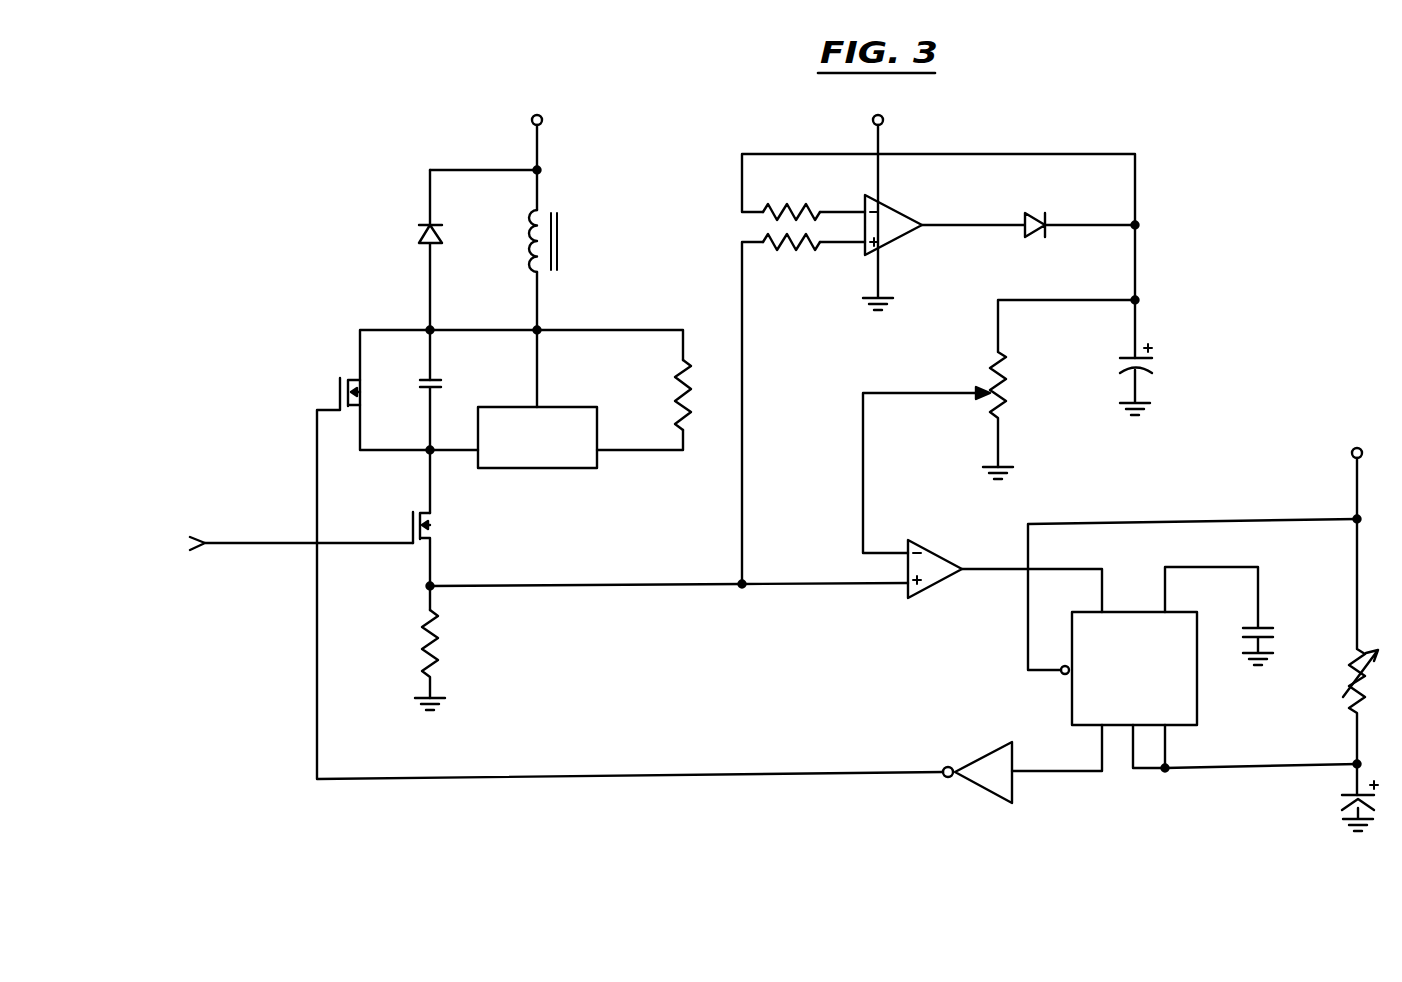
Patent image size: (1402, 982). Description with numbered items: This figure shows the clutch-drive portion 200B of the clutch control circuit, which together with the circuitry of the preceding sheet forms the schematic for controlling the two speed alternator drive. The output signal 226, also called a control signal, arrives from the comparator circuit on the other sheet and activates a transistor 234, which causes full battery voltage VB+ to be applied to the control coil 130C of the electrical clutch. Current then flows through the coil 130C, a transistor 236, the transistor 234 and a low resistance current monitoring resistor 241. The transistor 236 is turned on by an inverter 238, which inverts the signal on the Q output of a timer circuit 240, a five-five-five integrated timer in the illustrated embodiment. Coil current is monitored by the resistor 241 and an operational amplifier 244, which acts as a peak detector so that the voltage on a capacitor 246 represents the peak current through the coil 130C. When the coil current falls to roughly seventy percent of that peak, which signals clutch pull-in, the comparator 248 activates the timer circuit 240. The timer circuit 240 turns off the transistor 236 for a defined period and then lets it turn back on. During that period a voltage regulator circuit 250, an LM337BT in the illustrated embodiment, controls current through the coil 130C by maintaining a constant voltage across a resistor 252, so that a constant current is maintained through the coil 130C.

The lamp drive and regulation circuit 200B is at (1330, 175).
The control coil 130C is at (548, 210).
The transistor 236 is at (333, 378).
The resistor 252 is at (680, 380).
The voltage regulator circuit 250 is at (583, 470).
The transistor 234 is at (440, 523).
The output signal 226 is at (280, 546).
The current monitoring resistor 241 is at (437, 656).
The operational amplifier 244 is at (905, 237).
The capacitor 246 is at (1160, 358).
The comparator 248 is at (933, 585).
The timer circuit 240 is at (1197, 695).
The inverter 238 is at (985, 790).